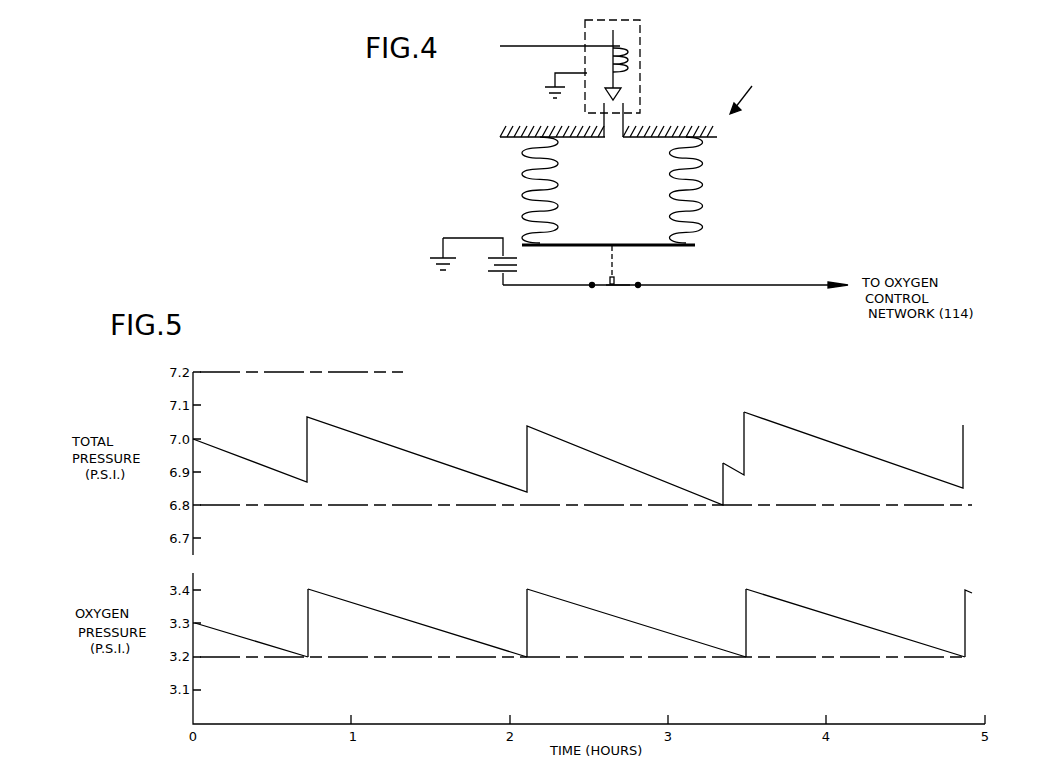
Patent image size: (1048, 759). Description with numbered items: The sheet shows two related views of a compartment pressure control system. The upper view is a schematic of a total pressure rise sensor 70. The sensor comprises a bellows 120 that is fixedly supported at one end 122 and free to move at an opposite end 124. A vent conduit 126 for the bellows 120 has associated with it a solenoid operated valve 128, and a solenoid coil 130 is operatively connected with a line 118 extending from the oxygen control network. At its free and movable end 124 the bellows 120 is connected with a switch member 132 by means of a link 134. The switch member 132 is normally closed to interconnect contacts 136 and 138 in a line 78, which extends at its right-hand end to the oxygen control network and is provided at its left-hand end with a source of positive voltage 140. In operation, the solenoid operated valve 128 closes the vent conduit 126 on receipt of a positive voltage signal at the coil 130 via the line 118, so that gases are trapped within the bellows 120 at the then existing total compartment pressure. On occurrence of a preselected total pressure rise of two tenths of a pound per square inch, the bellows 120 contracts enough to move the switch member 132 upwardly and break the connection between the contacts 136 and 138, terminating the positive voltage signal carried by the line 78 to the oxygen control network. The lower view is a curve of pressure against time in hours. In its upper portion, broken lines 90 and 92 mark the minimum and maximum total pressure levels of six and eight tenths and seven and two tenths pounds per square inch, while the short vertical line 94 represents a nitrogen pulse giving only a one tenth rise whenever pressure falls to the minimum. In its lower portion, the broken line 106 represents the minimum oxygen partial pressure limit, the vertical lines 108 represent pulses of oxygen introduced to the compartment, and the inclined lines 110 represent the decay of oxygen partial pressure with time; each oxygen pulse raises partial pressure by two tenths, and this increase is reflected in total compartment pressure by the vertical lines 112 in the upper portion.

In FIG. 4, the total pressure rise sensor 70 is at (750, 98).
In FIG. 4, the line 78 is at (568, 285).
In FIG. 4, the line 118 is at (564, 46).
In FIG. 4, the bellows 120 is at (700, 188).
In FIG. 4, the fixedly supported end of bellows 122 is at (531, 140).
In FIG. 4, the free movable end of bellows 124 is at (692, 248).
In FIG. 4, the vent conduit 126 is at (624, 120).
In FIG. 4, the solenoid operated valve 128 is at (619, 92).
In FIG. 4, the solenoid coil 130 is at (625, 62).
In FIG. 4, the switch member 132 is at (622, 287).
In FIG. 4, the link 134 is at (640, 262).
In FIG. 4, the contact 136 is at (601, 282).
In FIG. 4, the contact 138 is at (646, 284).
In FIG. 4, the source of positive voltage 140 is at (491, 263).
In FIG. 5, the broken line 90 is at (263, 507).
In FIG. 5, the broken line 92 is at (275, 371).
In FIG. 5, the short vertical line 94 is at (723, 478).
In FIG. 5, the broken line 106 is at (975, 656).
In FIG. 5, the vertical lines 108 is at (308, 627).
In FIG. 5, the inclined lines 110 is at (387, 612).
In FIG. 5, the vertical lines 112 is at (307, 452).